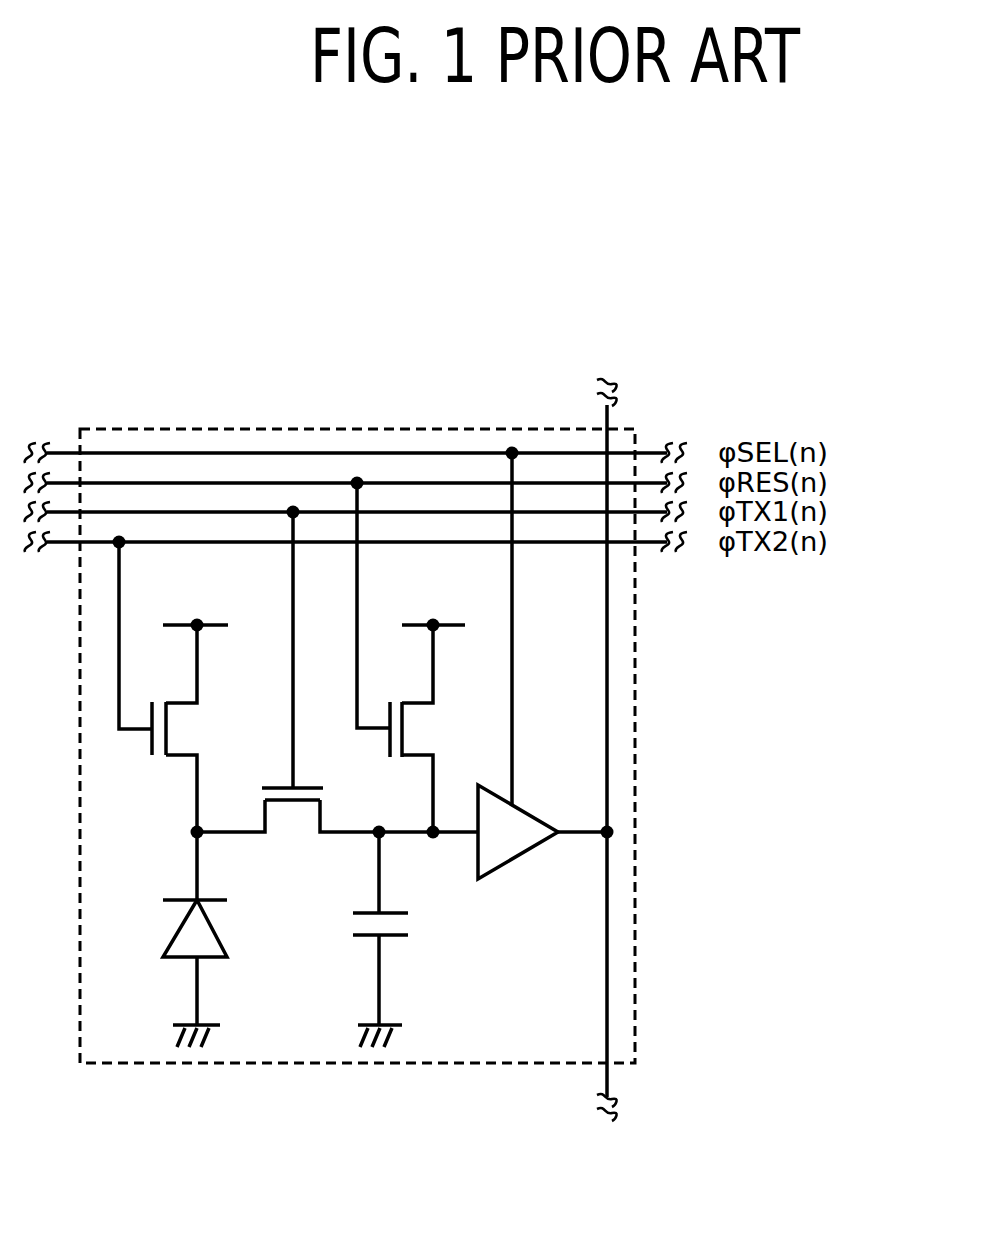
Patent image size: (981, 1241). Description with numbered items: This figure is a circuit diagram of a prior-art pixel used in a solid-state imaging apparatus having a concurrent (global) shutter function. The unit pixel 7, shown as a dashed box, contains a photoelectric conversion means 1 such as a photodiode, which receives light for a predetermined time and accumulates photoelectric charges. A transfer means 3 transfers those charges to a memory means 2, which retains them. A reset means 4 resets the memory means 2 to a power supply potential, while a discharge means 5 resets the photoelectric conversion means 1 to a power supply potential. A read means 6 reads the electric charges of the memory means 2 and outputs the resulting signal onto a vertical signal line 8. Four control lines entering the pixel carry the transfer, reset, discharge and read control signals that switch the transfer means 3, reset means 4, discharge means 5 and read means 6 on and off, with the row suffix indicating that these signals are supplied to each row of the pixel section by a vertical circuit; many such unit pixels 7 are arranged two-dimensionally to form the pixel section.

The photoelectric conversion means 1 is at (180, 928).
The memory means 2 is at (413, 924).
The transfer means 3 is at (293, 822).
The reset means 4 is at (418, 730).
The discharge means 5 is at (175, 763).
The read means 6 is at (530, 812).
The unit pixel 7 is at (398, 428).
The vertical signal line 8 is at (607, 1018).